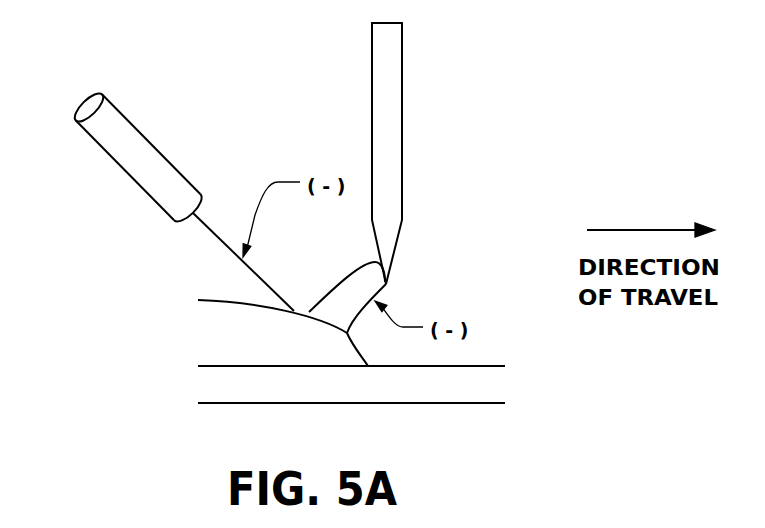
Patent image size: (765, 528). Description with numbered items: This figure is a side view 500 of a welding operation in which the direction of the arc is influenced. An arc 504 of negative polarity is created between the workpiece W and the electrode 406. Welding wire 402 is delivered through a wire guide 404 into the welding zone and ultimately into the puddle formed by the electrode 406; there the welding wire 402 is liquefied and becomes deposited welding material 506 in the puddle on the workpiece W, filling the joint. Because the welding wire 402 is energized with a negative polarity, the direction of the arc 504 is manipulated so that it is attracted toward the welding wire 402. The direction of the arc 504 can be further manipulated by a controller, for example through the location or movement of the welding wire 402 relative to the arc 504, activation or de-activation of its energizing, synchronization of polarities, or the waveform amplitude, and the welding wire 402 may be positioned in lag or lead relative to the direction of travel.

The side view 500 is at (601, 127).
The welding wire 402 is at (210, 229).
The wire guide 404 is at (131, 121).
The electrode 406 is at (402, 75).
The arc 504 is at (357, 273).
The deposited welding material 506 is at (262, 352).
The workpiece W is at (370, 397).